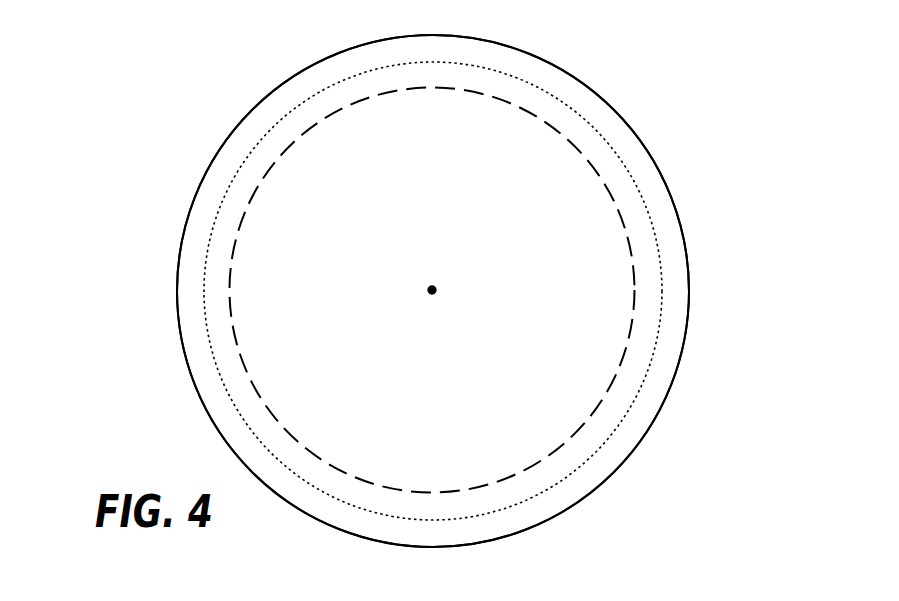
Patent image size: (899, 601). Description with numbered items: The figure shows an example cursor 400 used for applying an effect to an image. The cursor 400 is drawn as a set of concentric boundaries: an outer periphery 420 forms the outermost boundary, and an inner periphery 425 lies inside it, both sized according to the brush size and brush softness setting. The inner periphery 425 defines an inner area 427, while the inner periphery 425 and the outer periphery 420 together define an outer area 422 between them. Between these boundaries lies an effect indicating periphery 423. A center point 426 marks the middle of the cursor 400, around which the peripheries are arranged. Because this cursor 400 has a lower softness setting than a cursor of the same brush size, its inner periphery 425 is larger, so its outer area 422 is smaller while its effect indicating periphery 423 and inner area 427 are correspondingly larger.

The cursor 400 is at (201, 112).
The outer periphery 420 is at (635, 130).
The outer area 422 is at (648, 187).
The effect indicating periphery 423 is at (615, 432).
The inner periphery 425 is at (633, 262).
The center point 426 is at (424, 289).
The inner area 427 is at (390, 385).